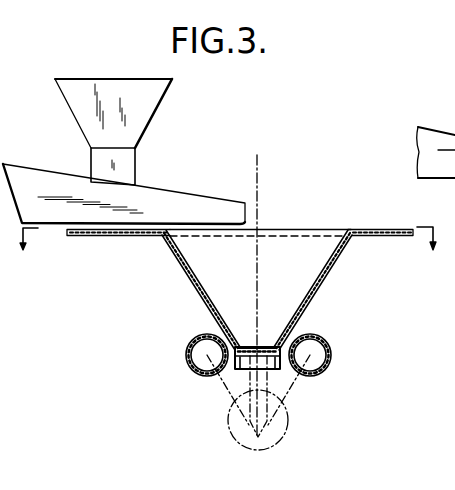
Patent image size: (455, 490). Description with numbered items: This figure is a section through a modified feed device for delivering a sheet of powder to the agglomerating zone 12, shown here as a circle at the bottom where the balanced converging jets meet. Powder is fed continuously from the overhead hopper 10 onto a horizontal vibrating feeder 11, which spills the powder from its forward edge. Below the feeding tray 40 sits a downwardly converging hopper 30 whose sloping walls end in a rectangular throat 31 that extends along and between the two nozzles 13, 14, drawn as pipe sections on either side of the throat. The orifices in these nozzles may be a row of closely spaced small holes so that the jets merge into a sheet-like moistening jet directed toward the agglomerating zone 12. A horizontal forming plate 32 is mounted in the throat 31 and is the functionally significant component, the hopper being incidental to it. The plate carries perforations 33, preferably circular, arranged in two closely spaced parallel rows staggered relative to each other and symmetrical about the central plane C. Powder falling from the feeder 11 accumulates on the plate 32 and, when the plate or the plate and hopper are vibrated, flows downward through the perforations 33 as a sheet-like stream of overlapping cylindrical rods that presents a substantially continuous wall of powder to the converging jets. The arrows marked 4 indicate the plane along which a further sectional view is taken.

The overhead hopper 10 is at (160, 106).
The horizontal vibrating feeder 11 is at (208, 173).
The agglomerating zone 12 is at (283, 441).
The nozzle 13 is at (186, 351).
The nozzle 14 is at (330, 349).
The downwardly converging hopper 30 is at (321, 283).
The rectangular throat 31 is at (236, 366).
The horizontal forming plate 32 is at (258, 347).
The perforations 33 is at (272, 347).
The feeding tray 40 is at (100, 237).
The section line 4- 4 is at (225, 254).